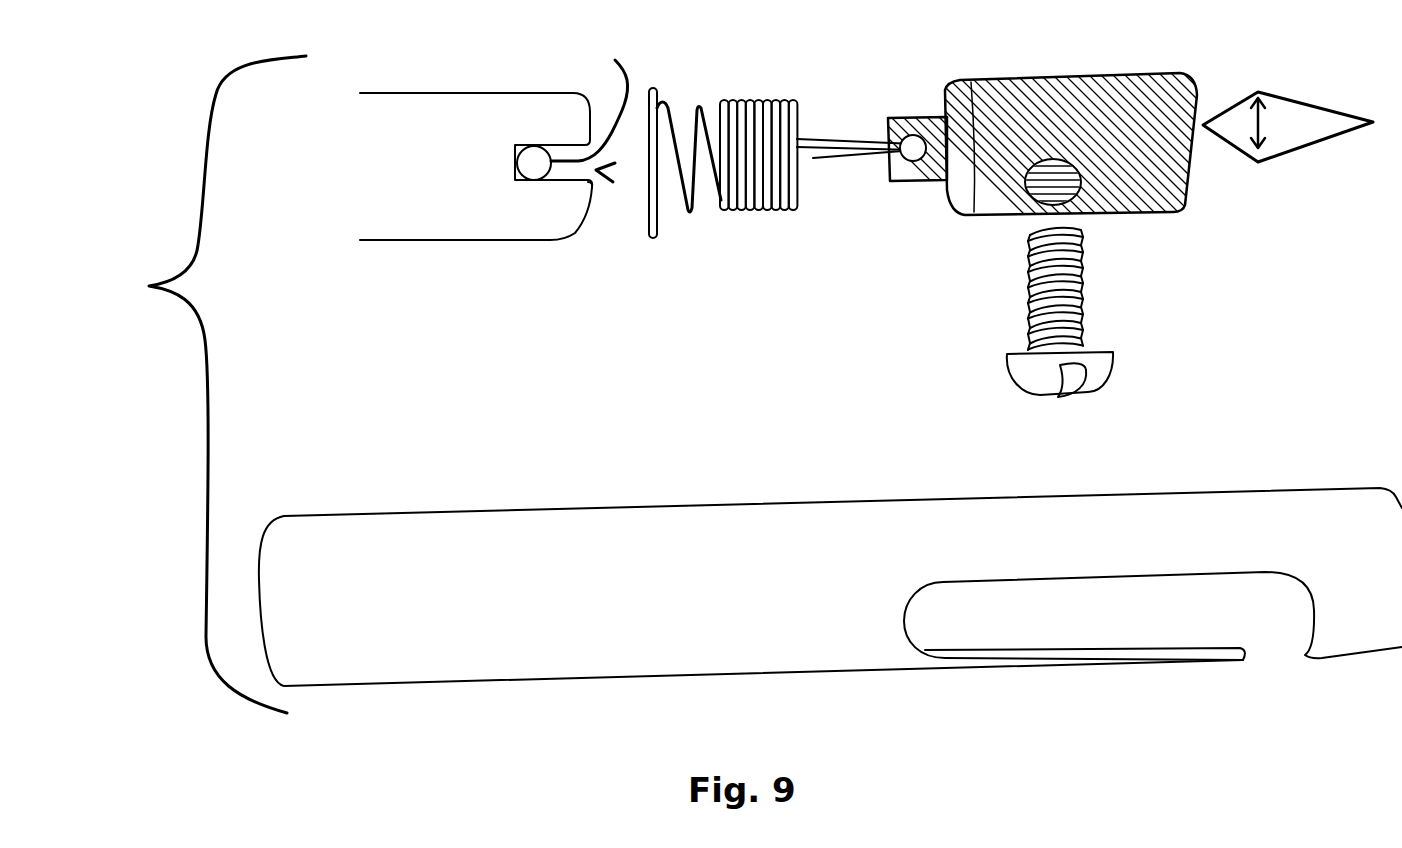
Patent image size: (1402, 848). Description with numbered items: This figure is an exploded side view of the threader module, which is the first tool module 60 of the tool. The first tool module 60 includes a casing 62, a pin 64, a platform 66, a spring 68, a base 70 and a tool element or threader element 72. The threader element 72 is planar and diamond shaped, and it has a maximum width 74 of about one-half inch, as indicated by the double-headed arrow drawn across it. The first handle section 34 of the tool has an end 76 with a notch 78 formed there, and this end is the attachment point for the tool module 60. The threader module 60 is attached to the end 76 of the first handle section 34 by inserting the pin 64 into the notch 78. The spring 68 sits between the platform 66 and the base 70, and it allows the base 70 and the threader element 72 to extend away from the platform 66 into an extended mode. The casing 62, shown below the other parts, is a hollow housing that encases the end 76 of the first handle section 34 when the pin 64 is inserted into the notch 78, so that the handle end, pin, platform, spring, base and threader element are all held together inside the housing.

The first handle section 34 is at (423, 240).
The first tool module 60 is at (189, 384).
The casing 62 is at (1190, 492).
The pin 64 is at (589, 95).
The platform 66 is at (657, 92).
The spring 68 is at (760, 208).
The base 70 is at (1113, 203).
The threader element 72 is at (1345, 108).
The maximum width 74 is at (1265, 122).
The end 76 is at (590, 207).
The notch 78 is at (598, 171).